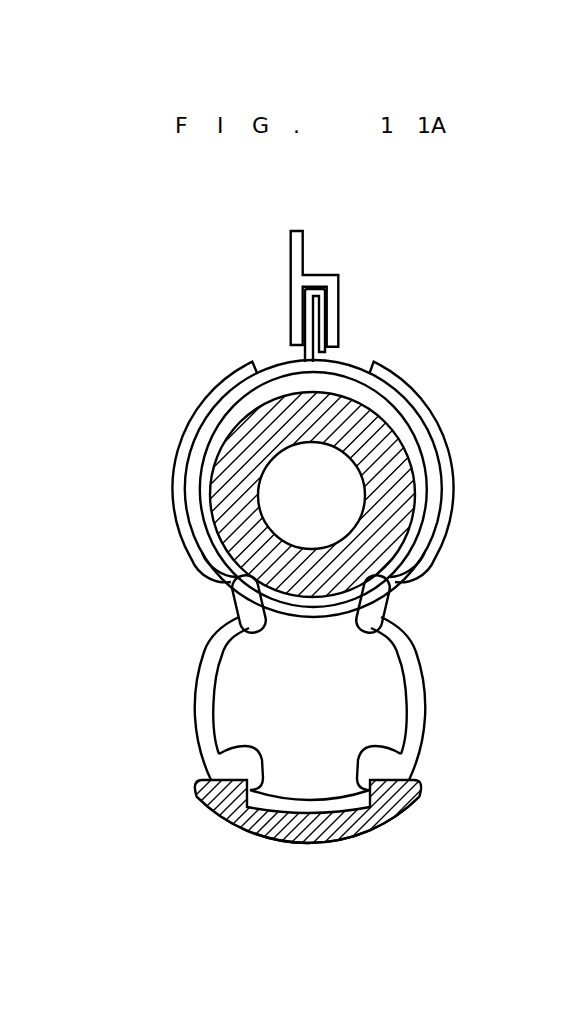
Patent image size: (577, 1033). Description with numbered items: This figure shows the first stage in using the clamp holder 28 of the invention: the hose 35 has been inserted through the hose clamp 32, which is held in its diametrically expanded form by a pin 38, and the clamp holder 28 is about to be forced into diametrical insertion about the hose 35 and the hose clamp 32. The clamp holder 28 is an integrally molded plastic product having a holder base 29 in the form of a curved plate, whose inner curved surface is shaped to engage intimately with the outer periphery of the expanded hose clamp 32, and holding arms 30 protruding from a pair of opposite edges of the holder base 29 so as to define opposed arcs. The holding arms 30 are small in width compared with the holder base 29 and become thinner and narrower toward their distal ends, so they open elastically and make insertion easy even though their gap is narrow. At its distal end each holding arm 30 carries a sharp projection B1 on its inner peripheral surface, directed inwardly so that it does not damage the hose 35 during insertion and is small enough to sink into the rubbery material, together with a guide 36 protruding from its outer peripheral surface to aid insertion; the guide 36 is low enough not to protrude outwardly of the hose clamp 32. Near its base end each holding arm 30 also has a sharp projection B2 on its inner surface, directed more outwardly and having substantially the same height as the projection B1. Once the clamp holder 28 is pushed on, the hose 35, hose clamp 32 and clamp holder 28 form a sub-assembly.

The clamp holder 28 is at (210, 829).
The holder base 29 is at (383, 820).
The holding arms 30 is at (208, 656).
The hose clamp 32 is at (358, 364).
The hose 35 is at (373, 413).
The guide 36 is at (215, 590).
The pin 38 is at (303, 243).
The sharp projection B1 is at (233, 603).
The sharp projection B2 is at (219, 754).